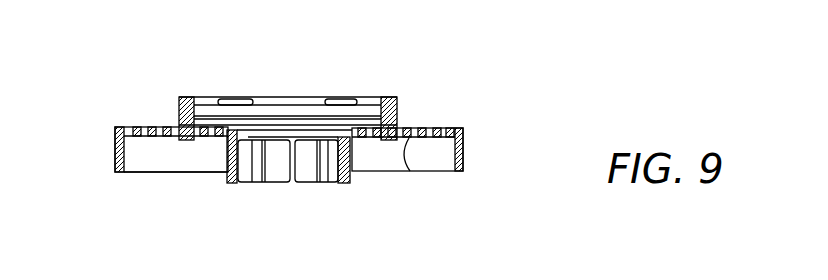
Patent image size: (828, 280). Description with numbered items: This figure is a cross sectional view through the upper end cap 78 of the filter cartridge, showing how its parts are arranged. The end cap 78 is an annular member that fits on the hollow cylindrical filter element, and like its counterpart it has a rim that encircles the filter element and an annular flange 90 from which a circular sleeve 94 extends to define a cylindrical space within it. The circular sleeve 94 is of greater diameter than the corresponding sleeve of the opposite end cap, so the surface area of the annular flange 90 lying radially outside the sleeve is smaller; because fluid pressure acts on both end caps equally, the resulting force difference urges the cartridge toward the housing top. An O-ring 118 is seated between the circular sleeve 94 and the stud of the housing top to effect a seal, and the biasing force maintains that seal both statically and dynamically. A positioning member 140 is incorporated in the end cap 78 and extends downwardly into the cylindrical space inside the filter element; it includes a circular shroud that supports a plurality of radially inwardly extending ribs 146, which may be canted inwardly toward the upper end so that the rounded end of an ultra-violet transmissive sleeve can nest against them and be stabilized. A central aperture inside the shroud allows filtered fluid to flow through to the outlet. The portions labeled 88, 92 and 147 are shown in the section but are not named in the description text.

The end cap 78 is at (170, 173).
The first tubular body portion 88 is at (113, 157).
The annular flange 90 is at (426, 127).
The wall of second body portion 92 is at (410, 171).
The circular sleeve 94 is at (181, 114).
The O-ring 118 is at (384, 97).
The positioning member 140 is at (232, 181).
The ribs 146 is at (266, 172).
The chamber wall 147 is at (347, 180).